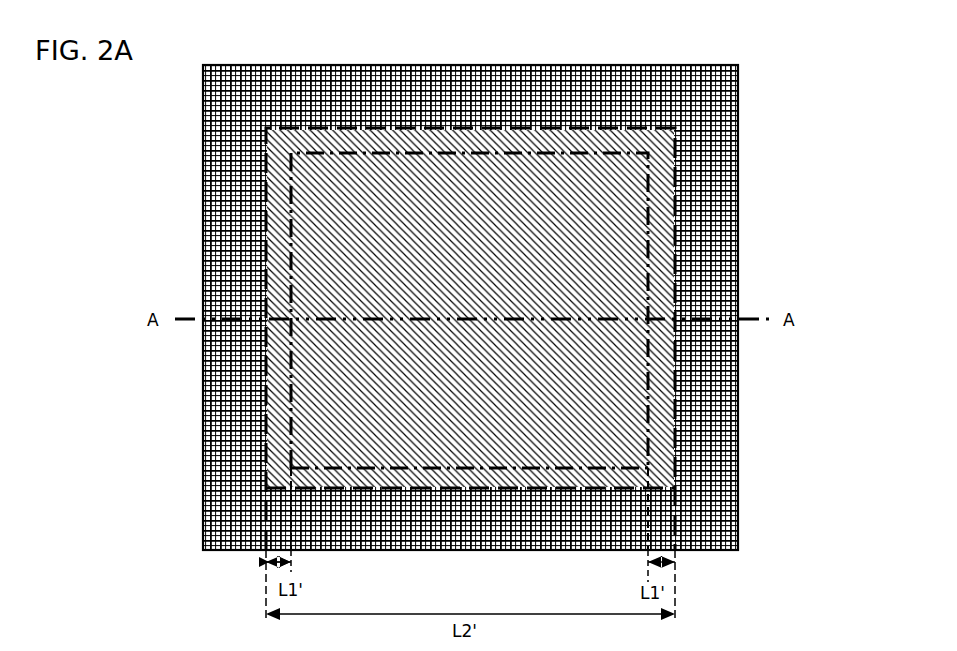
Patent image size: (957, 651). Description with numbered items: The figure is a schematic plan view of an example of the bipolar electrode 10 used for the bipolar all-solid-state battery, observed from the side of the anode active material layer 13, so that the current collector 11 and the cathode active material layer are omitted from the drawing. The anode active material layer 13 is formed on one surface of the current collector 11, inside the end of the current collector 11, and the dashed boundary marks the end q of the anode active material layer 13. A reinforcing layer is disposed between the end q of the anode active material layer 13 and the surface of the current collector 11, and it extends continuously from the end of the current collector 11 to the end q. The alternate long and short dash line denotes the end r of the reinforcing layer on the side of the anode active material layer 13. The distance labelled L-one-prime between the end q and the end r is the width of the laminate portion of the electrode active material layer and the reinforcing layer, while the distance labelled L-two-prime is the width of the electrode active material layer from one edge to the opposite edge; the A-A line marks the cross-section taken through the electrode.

The bipolar electrode 10 is at (522, 278).
The current collector 11 is at (712, 262).
The anode active material layer 13 is at (710, 224).
The end of the anode active material layer q is at (440, 128).
The end of the reinforcing layer r is at (508, 153).